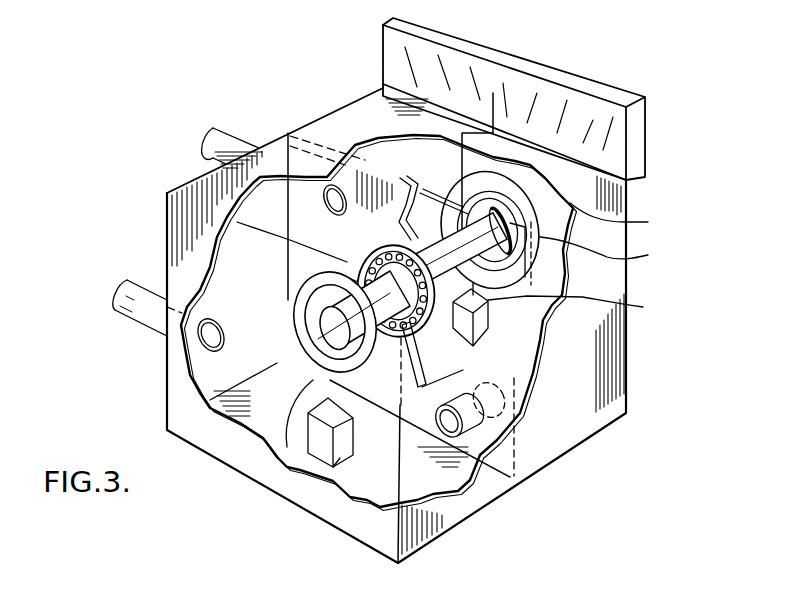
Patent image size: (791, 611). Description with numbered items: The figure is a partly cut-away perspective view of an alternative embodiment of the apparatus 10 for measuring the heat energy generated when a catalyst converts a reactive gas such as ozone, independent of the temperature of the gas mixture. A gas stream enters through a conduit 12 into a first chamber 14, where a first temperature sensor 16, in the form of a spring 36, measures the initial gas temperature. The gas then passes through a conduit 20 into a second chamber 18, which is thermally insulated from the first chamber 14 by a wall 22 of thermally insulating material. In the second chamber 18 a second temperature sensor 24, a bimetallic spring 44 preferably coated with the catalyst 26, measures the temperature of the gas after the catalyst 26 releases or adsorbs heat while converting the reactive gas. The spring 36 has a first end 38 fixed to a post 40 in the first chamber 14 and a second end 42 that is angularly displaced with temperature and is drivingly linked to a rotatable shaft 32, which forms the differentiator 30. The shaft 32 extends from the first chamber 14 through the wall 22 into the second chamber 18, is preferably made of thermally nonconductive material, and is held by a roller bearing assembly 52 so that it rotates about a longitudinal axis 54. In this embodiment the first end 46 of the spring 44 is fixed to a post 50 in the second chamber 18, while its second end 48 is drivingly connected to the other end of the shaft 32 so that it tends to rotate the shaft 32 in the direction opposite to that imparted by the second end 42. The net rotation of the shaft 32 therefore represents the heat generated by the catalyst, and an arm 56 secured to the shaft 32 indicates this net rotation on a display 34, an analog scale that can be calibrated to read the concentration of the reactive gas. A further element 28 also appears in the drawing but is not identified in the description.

The apparatus 10 is at (201, 106).
The conduit 12 is at (134, 308).
The first chamber 14 is at (420, 471).
The temperature sensor 16 is at (282, 326).
The second chamber 18 is at (349, 106).
The conduit 20 is at (468, 420).
The wall 22 is at (310, 232).
The temperature sensor 24 is at (626, 218).
The catalyst 26 is at (606, 256).
The output shaft 28 is at (238, 138).
The differentiator 30 is at (371, 258).
The rotatable shaft 32 is at (458, 247).
The display 34 is at (522, 90).
The spring 36 is at (287, 447).
The first end 38 is at (353, 422).
The post 40 is at (337, 460).
The second end 42 is at (295, 296).
The spring 44 is at (535, 164).
The first end 46 is at (640, 306).
The second end 48 is at (460, 206).
The post 50 is at (493, 302).
The roller bearing assembly 52 is at (448, 321).
The longitudinal axis 54 is at (279, 365).
The arm 56 is at (491, 93).